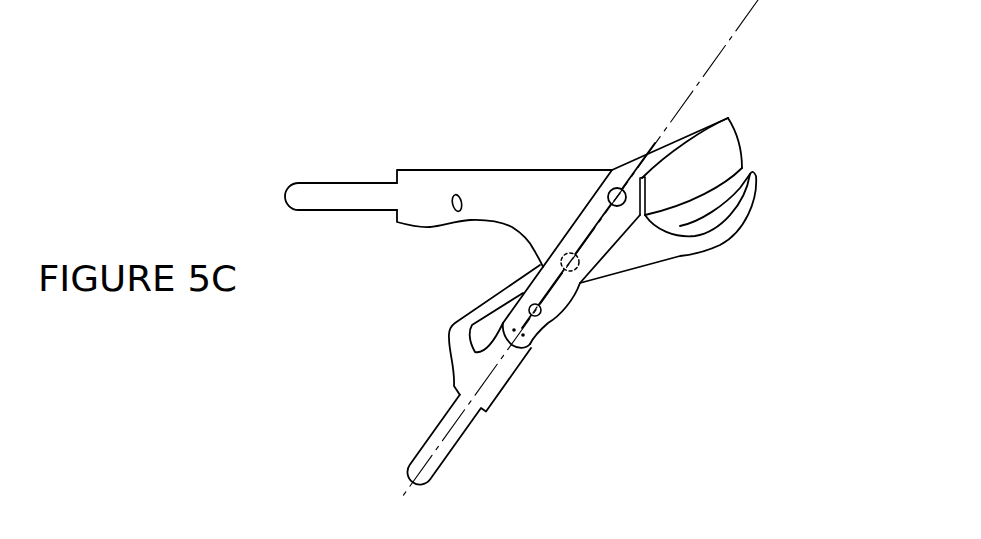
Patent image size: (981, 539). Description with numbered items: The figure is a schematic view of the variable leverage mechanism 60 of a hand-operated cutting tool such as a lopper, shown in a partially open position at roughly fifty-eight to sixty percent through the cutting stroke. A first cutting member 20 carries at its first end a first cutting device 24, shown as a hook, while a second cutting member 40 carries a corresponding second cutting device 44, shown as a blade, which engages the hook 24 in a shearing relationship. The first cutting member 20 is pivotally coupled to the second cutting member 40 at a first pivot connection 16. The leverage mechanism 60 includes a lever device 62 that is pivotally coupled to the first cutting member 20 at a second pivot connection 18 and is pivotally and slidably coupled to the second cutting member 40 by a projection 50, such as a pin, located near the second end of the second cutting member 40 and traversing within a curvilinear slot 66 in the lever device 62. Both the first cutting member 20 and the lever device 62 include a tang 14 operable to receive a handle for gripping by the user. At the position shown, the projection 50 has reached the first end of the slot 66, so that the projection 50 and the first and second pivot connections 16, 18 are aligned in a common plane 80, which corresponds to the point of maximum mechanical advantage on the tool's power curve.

The tang 14 is at (323, 182).
The first pivot connection 16 is at (617, 188).
The second pivot connection 18 is at (580, 263).
The first cutting member 20 is at (570, 178).
The first cutting device 24 is at (703, 220).
The second cutting member 40 is at (697, 137).
The second cutting device 44 is at (728, 153).
The projection 50 is at (539, 316).
The variable leverage mechanism 60 is at (437, 265).
The lever device 62 is at (452, 352).
The curvilinear slot 66 is at (477, 340).
The common plane 80 is at (733, 58).